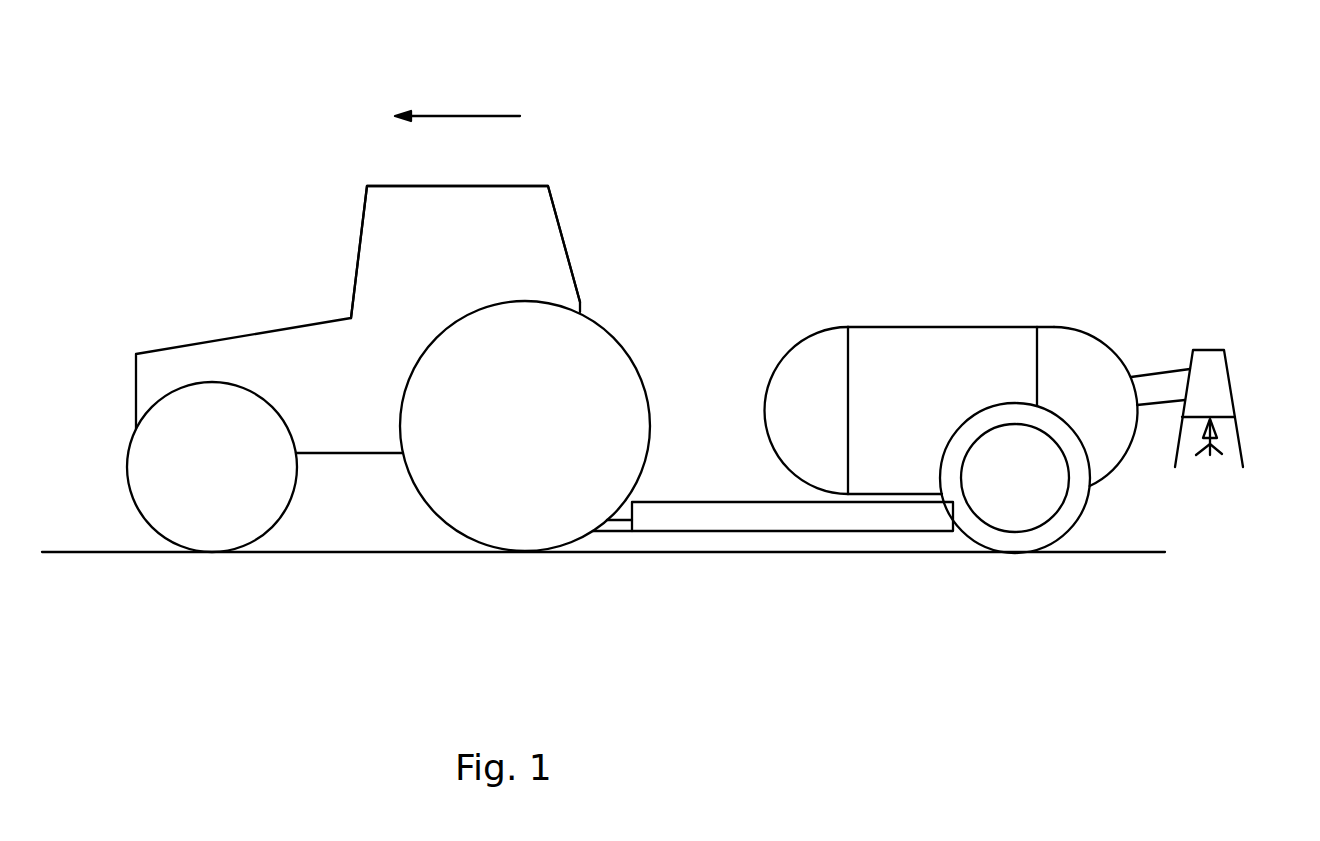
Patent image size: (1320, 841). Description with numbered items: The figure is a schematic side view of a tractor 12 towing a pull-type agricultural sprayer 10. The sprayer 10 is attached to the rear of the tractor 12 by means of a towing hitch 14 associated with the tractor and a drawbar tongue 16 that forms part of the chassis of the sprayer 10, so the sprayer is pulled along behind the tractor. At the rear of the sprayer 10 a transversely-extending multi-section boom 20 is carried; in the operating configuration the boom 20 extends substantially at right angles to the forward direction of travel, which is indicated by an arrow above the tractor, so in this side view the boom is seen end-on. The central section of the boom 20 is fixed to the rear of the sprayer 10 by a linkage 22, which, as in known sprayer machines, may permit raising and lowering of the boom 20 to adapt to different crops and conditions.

The pull-type agricultural sprayer 10 is at (950, 283).
The tractor 12 is at (397, 202).
The towing hitch 14 is at (617, 528).
The drawbar tongue 16 is at (737, 518).
The multi-section boom 20 is at (1213, 350).
The linkage 22 is at (1162, 369).